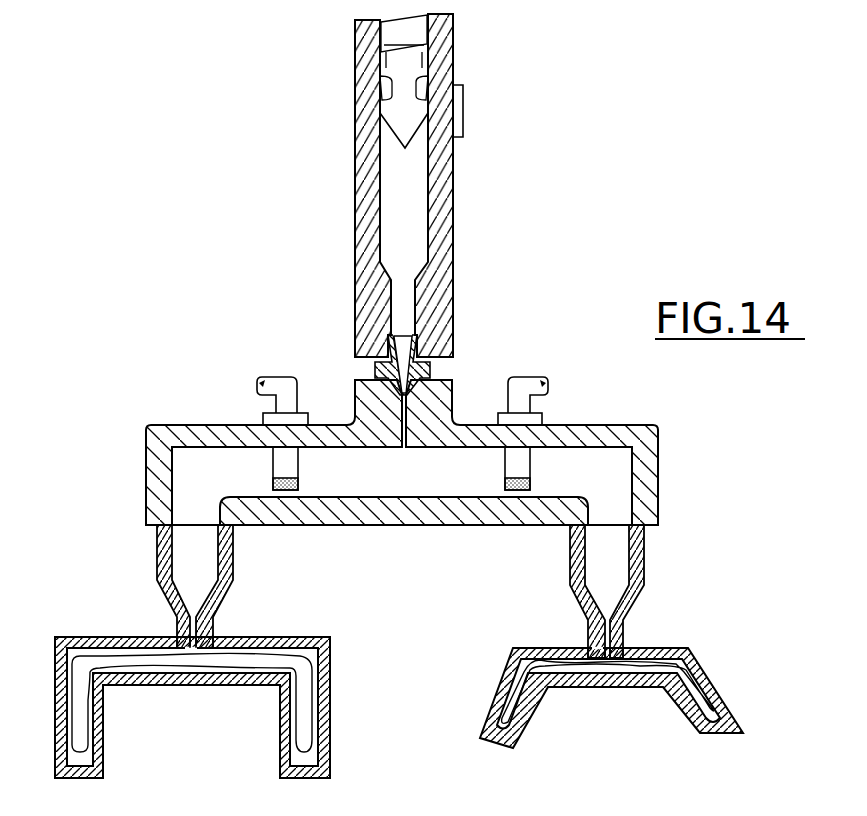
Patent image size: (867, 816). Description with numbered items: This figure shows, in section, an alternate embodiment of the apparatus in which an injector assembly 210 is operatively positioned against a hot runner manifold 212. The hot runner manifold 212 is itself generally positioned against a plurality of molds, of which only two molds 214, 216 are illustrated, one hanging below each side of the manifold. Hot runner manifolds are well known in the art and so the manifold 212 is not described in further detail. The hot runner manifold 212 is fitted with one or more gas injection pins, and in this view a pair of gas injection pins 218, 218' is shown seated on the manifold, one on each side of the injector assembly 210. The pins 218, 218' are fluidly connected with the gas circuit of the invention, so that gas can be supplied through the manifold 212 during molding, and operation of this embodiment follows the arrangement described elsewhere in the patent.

The injector assembly 210 is at (535, 192).
The hot runner manifold 212 is at (120, 418).
The mold 214 is at (352, 636).
The mold 216 is at (486, 650).
The gas injection pin 218 is at (256, 403).
The gas injection pin 218' is at (547, 401).